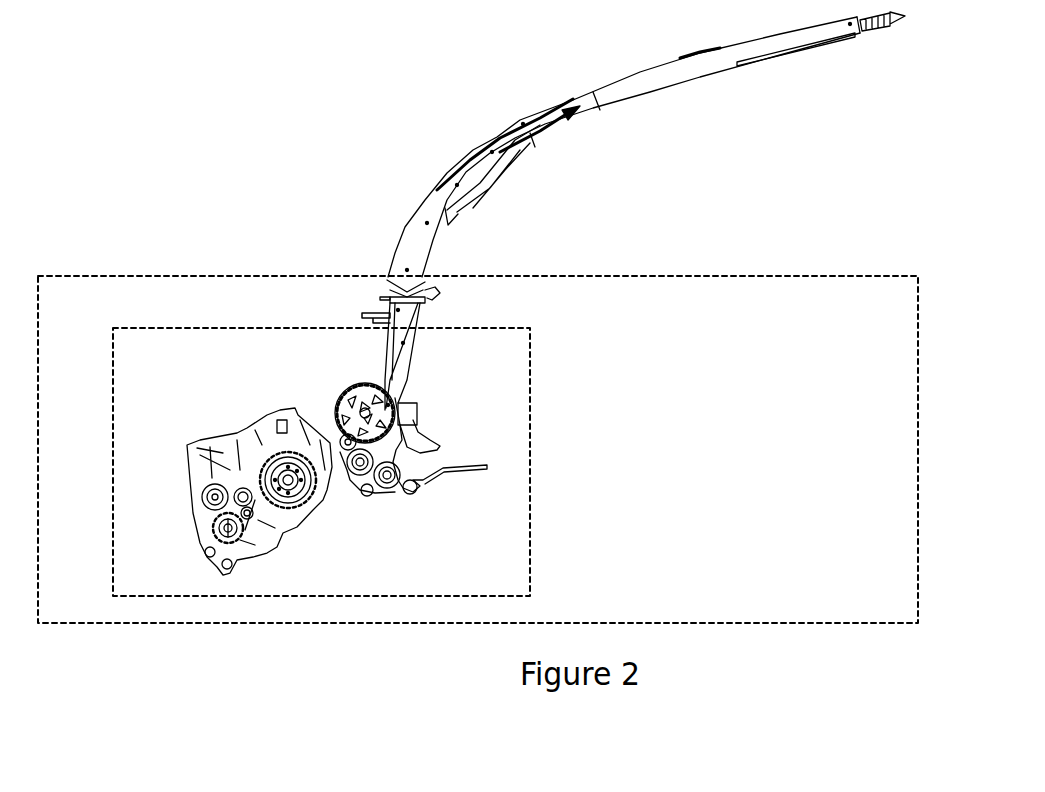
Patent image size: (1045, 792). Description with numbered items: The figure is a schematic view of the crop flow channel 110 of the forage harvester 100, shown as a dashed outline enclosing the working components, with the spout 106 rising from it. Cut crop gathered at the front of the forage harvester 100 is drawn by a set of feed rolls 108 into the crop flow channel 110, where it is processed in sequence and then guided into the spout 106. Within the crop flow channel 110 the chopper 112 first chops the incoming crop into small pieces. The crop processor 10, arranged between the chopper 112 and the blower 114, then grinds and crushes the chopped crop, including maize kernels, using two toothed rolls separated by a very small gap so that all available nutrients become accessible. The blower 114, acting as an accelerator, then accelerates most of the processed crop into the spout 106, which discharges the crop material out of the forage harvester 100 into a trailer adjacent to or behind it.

The crop processor 10 is at (375, 487).
The forage harvester 100 is at (680, 623).
The spout 106 is at (622, 87).
The feed rolls 108 is at (215, 522).
The crop flow channel 110 is at (317, 595).
The chopper 112 is at (307, 495).
The blower 114 is at (350, 388).